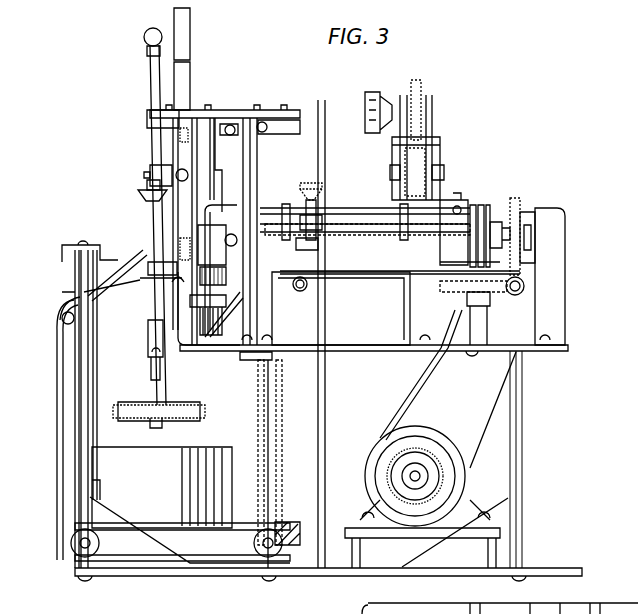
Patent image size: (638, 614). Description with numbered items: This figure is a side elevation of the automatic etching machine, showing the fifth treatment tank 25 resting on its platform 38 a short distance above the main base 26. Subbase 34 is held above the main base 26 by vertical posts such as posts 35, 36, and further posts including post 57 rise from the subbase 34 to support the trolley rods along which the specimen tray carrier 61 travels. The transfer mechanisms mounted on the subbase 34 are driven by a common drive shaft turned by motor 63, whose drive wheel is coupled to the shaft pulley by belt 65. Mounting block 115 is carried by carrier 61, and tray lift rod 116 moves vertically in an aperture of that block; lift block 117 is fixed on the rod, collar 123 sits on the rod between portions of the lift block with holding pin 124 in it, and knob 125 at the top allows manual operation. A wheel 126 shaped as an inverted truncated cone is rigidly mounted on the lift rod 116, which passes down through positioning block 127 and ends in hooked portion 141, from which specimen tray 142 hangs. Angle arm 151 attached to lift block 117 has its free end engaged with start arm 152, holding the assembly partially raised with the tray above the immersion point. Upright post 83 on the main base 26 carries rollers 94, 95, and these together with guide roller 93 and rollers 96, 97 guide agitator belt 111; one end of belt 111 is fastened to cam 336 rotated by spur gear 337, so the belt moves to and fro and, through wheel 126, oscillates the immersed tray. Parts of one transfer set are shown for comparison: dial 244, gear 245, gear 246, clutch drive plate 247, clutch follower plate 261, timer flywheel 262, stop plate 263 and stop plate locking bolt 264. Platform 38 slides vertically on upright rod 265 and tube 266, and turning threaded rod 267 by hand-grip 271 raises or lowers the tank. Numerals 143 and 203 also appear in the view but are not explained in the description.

The treatment tank 25 is at (126, 456).
The main base 26 is at (548, 570).
The subbase 34 is at (340, 351).
The vertical post 35 is at (262, 364).
The vertical post 36 is at (523, 413).
The platform 38 is at (292, 522).
The post 57 is at (258, 151).
The specimen tray carrier 61 is at (228, 110).
The motor 63 is at (440, 440).
The belt 65 is at (412, 384).
The upright post 83 is at (75, 272).
The guide roller 93 is at (127, 280).
The roller 94 is at (62, 312).
The roller 95 is at (72, 546).
The roller 96 is at (268, 557).
The roller 97 is at (306, 286).
The agitator belt 111 is at (57, 378).
The mounting block 115 is at (147, 117).
The tray lift rod 116 is at (150, 75).
The lift block 117 is at (158, 165).
The collar 123 is at (147, 182).
The holding pin 124 is at (144, 174).
The knob 125 is at (146, 32).
The wheel 126 is at (140, 196).
The positioning block 127 is at (154, 278).
The hooked portion 141 is at (148, 337).
The specimen tray 142 is at (205, 416).
The bar 143 is at (190, 20).
The angle arm 151 is at (222, 148).
The start arm 152 is at (229, 178).
The base element 203 is at (198, 613).
The dial 244 is at (380, 92).
The gear 245 is at (421, 82).
The gear 246 is at (420, 258).
The clutch drive plate 247 is at (486, 204).
The clutch follower plate 261 is at (476, 208).
The timer flywheel 262 is at (306, 228).
The stop plate 263 is at (306, 212).
The stop plate locking bolt 264 is at (300, 250).
The upright rod 265 is at (258, 393).
The tube 266 is at (326, 418).
The rod 267 is at (332, 214).
The hand-grip 271 is at (312, 190).
The cam 336 is at (520, 272).
The spur gear 337 is at (492, 298).